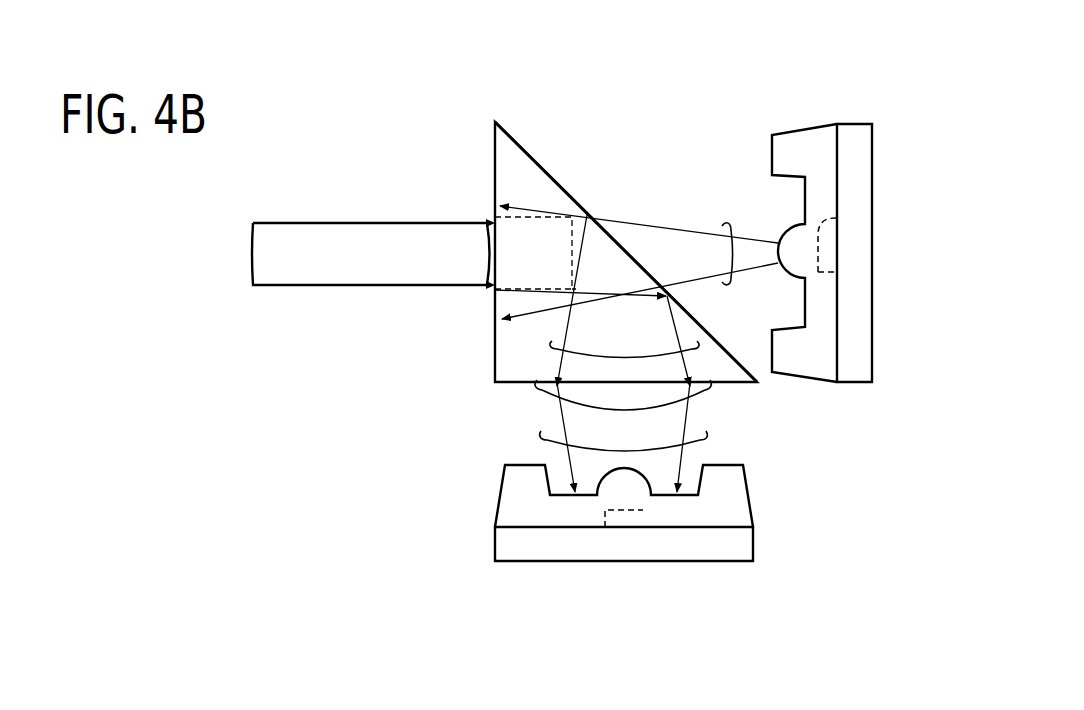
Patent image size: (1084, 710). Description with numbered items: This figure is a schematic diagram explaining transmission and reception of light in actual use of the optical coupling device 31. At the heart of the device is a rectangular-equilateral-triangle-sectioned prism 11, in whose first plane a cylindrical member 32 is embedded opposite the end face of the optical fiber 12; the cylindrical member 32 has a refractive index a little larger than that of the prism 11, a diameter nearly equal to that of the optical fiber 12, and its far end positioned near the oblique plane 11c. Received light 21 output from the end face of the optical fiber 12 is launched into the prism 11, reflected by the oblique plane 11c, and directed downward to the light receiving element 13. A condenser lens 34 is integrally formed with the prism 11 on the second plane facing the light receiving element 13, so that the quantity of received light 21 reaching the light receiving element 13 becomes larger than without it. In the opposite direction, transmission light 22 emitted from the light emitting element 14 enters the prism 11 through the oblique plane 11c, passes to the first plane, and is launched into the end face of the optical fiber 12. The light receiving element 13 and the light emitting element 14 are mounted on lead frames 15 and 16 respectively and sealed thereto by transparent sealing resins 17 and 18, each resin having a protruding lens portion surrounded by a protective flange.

The optical coupling device 31 is at (513, 118).
The prism 11 is at (508, 353).
The oblique plane 11c is at (530, 157).
The optical fiber 12 is at (356, 222).
The cylindrical member 32 is at (518, 282).
The condenser lens 34 is at (543, 390).
The received light 21 is at (707, 436).
The transmission light 22 is at (728, 225).
The transparent sealing resin 18 is at (795, 131).
The lead frame 16 is at (856, 123).
The light emitting element 14 is at (837, 218).
The transparent sealing resin 17 is at (755, 493).
The lead frame 15 is at (755, 543).
The light receiving element 13 is at (643, 510).